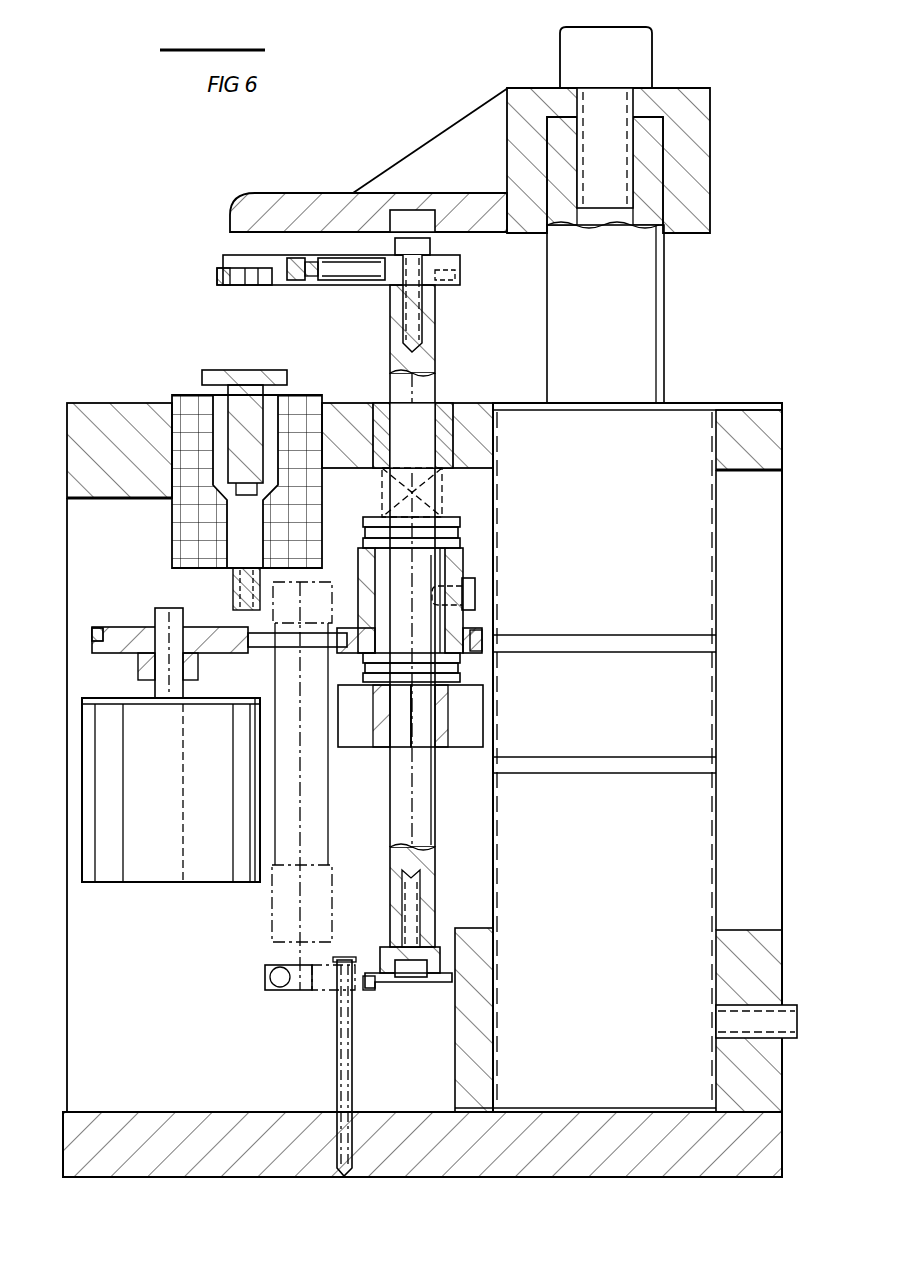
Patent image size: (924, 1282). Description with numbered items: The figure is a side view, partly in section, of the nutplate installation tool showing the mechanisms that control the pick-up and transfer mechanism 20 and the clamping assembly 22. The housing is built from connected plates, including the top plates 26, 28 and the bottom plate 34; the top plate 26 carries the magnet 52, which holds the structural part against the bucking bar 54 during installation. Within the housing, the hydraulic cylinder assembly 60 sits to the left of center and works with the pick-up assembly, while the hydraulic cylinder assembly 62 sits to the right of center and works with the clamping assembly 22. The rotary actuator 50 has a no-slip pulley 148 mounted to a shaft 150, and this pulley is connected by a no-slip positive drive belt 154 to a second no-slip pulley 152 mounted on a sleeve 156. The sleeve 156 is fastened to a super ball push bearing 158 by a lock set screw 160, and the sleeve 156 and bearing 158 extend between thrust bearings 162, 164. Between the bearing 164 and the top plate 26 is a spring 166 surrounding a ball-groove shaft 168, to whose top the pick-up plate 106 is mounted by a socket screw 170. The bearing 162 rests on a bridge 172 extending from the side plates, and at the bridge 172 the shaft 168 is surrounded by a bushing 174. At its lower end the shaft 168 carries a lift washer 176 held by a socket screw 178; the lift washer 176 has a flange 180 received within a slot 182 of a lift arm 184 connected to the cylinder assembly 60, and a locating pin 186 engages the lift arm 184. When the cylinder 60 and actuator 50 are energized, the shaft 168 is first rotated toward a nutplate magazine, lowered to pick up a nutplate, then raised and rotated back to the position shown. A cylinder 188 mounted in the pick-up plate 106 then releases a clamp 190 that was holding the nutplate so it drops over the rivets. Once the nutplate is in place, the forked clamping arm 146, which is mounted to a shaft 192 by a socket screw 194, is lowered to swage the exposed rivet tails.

The pick-up and transfer mechanism 20 is at (228, 244).
The clamping assembly 22 is at (428, 118).
The top plate 26 is at (147, 404).
The top plate 28 is at (783, 406).
The bottom plate 34 is at (172, 1165).
The rotary actuator 50 is at (92, 750).
The magnet 52 is at (170, 548).
The bucking bar 54 is at (236, 372).
The hydraulic cylinder assembly 60 is at (272, 888).
The hydraulic cylinder assembly 62 is at (700, 846).
The pick-up plate 106 is at (222, 264).
The forked clamping arm 146 is at (700, 115).
The no-slip pulley 148 is at (130, 630).
The shaft 150 is at (176, 692).
The no-slip pulley 152 is at (470, 655).
The no-slip positive drive belt 154 is at (94, 638).
The sleeve 156 is at (463, 572).
The super ball push bearing 158 is at (440, 630).
The lock set screw 160 is at (477, 598).
The thrust bearing 162 is at (460, 688).
The thrust bearing 164 is at (462, 526).
The spring 166 is at (445, 500).
The ball-groove shaft 168 is at (425, 392).
The socket screw 170 is at (410, 313).
The bridge 172 is at (468, 752).
The bushing 174 is at (378, 750).
The lift washer 176 is at (440, 956).
The socket screw 178 is at (420, 988).
The flange 180 is at (450, 974).
The slot 182 is at (368, 990).
The lift arm 184 is at (325, 985).
The locating pin 186 is at (348, 1100).
The cylinder 188 is at (342, 272).
The clamp 190 is at (315, 272).
The shaft 192 is at (660, 330).
The socket screw 194 is at (645, 46).